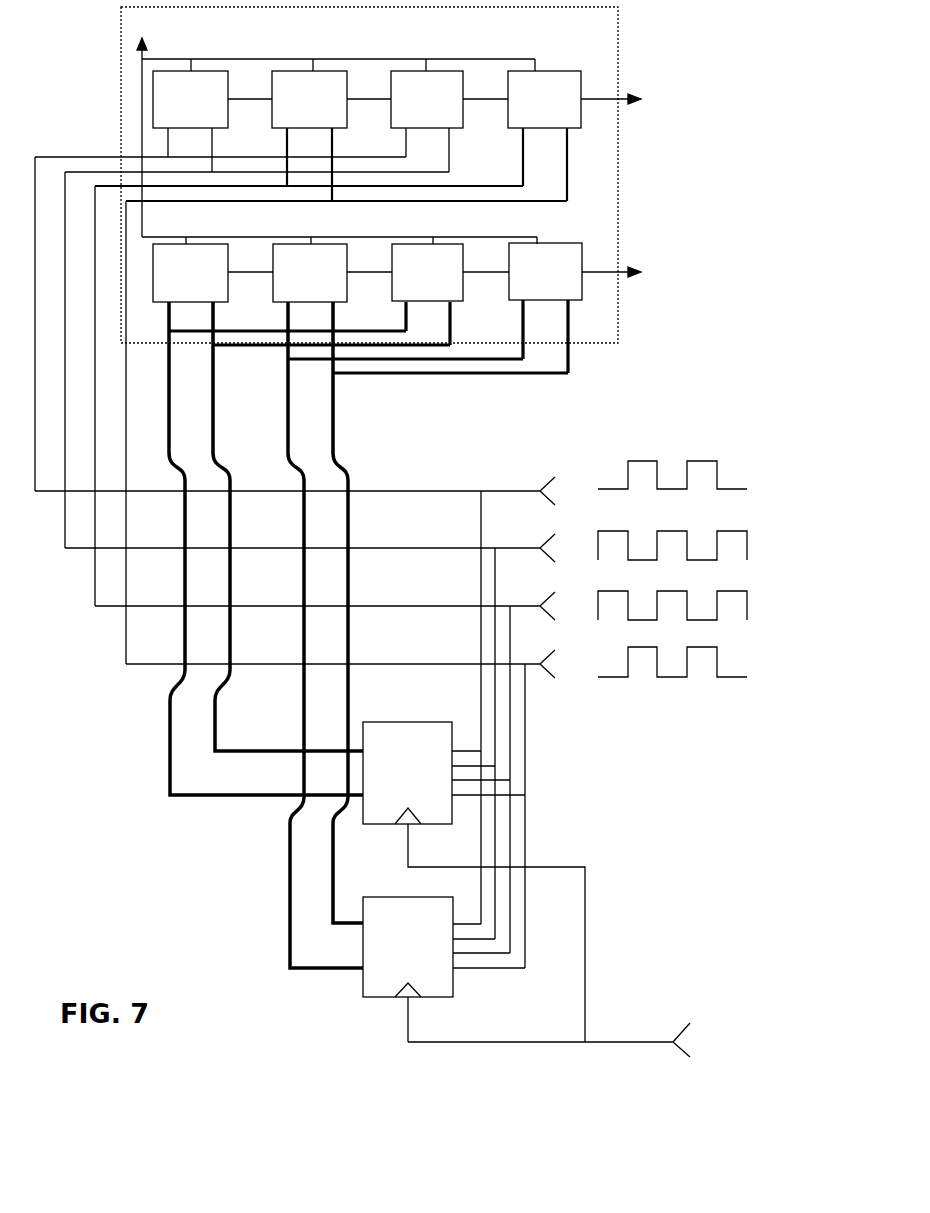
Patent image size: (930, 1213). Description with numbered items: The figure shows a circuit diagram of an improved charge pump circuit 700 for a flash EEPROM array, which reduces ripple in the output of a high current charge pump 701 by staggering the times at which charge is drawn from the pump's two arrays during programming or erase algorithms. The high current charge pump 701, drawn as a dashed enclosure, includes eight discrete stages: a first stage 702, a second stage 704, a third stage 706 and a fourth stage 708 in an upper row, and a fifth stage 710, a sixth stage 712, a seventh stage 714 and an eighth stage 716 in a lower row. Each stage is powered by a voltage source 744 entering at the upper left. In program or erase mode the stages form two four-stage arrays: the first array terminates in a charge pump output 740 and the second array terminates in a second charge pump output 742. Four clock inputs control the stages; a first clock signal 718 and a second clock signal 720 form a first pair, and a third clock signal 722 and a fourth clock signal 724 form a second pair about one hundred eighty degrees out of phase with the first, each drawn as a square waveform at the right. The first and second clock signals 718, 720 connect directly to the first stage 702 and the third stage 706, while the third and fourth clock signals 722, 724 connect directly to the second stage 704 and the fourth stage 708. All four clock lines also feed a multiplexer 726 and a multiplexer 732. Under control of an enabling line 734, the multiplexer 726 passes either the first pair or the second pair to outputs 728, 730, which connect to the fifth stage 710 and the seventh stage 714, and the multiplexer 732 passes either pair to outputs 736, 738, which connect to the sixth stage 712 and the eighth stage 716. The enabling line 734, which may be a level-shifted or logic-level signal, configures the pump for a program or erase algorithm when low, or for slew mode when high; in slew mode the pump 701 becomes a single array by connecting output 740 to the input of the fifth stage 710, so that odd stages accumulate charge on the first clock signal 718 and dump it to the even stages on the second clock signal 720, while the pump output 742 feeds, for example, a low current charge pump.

The charge pump circuit 700 is at (108, 784).
The high current charge pump 701 is at (618, 50).
The first stage 702 is at (163, 80).
The second stage 704 is at (282, 80).
The third stage 706 is at (404, 80).
The fourth stage 708 is at (518, 80).
The fifth stage 710 is at (163, 248).
The sixth stage 712 is at (298, 248).
The seventh stage 714 is at (421, 248).
The eighth stage 716 is at (539, 248).
The first clock signal 718 is at (737, 471).
The second clock signal 720 is at (753, 550).
The third clock signal 722 is at (753, 607).
The fourth clock signal 724 is at (745, 660).
The multiplexer 726 is at (390, 722).
The output 728 is at (227, 750).
The output 730 is at (168, 720).
The multiplexer 732 is at (403, 905).
The enabling line 734 is at (687, 1037).
The output 736 is at (350, 650).
The output 738 is at (303, 645).
The charge pump output 740 is at (641, 99).
The second charge pump output 742 is at (641, 272).
The voltage source 744 is at (138, 46).